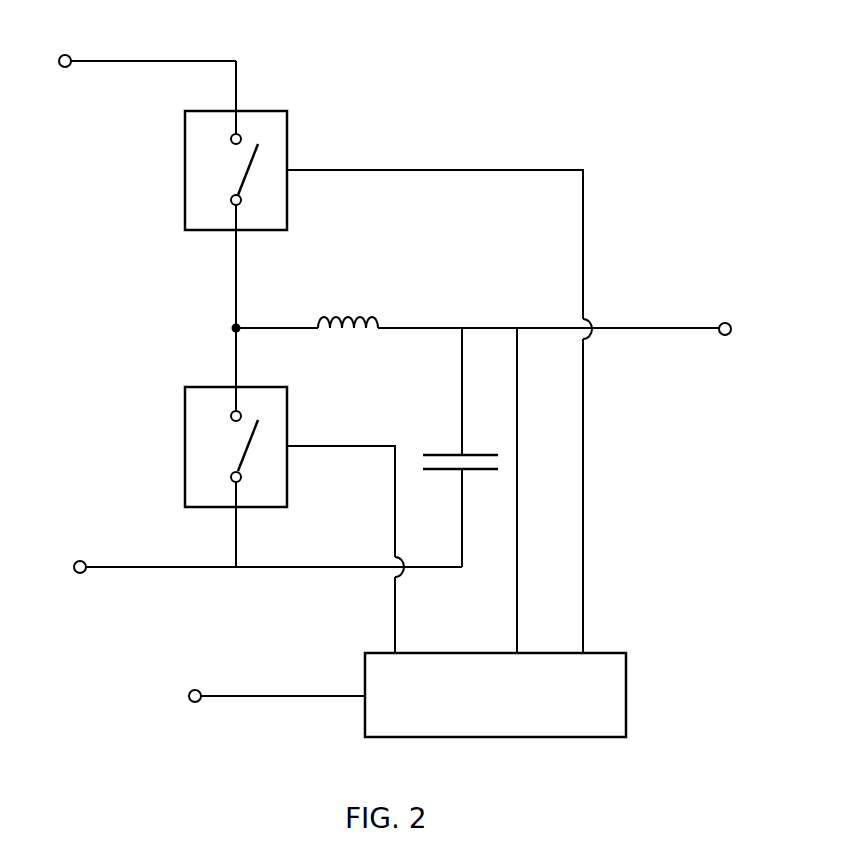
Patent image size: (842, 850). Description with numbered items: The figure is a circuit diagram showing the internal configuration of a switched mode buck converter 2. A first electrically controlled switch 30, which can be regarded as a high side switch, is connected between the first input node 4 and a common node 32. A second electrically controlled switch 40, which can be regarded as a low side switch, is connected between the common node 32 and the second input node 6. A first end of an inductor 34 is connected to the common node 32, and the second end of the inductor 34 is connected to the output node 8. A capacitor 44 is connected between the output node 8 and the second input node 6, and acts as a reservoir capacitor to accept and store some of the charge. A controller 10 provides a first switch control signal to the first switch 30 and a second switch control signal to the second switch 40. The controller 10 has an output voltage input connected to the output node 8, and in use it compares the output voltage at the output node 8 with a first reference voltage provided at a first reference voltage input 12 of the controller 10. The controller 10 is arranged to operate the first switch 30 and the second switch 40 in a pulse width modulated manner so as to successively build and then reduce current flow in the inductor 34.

The switched mode buck converter 2 is at (480, 122).
The first input node 4 is at (61, 54).
The second input node 6 is at (78, 578).
The output node 8 is at (728, 322).
The controller 10 is at (627, 695).
The first reference voltage input 12 is at (192, 703).
The first electrically controlled switch 30 is at (185, 170).
The common node 32 is at (231, 330).
The inductor 34 is at (337, 306).
The second electrically controlled switch 40 is at (185, 447).
The capacitor 44 is at (473, 471).